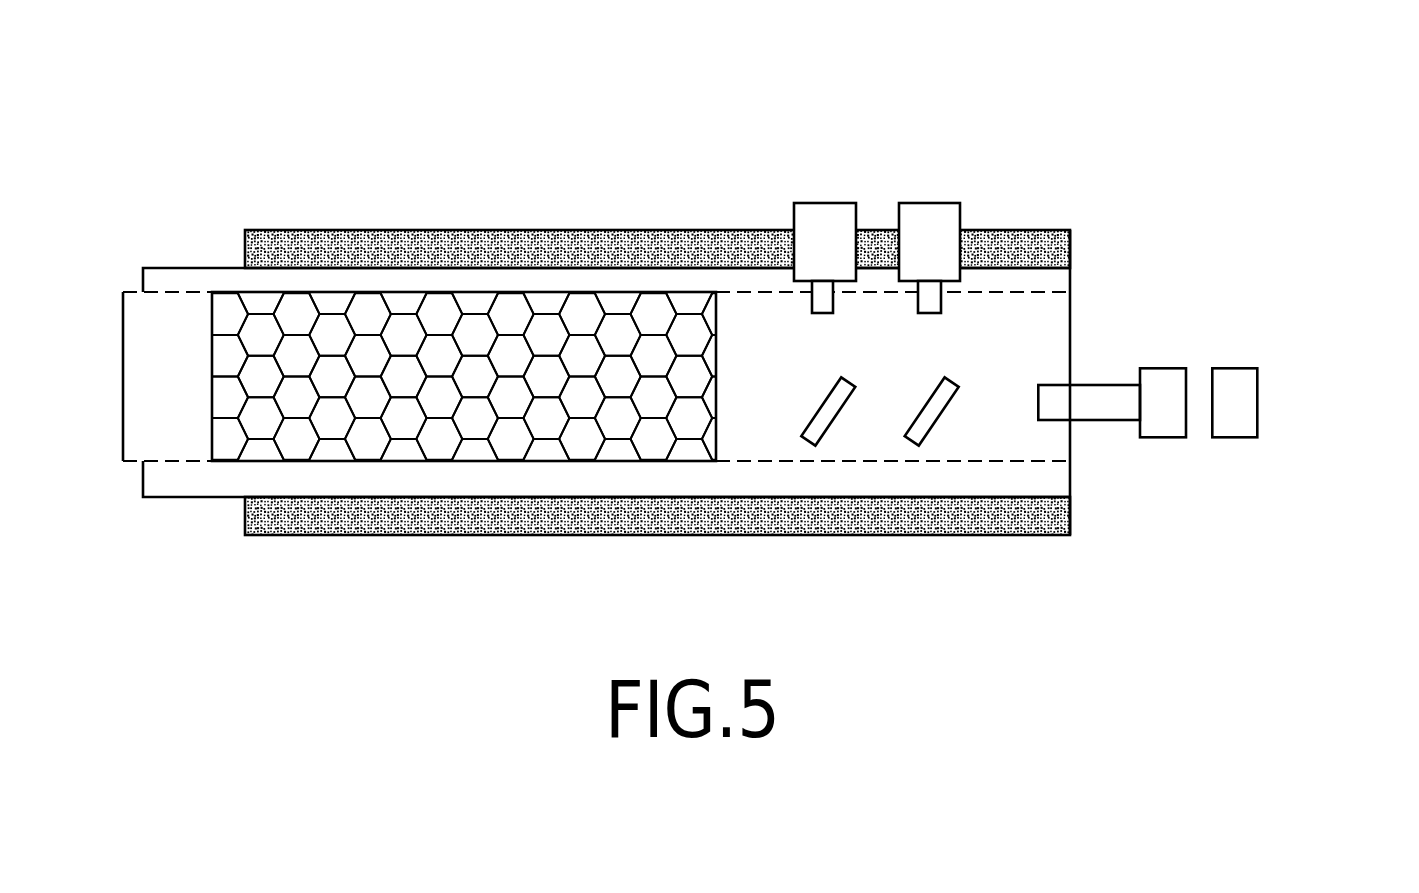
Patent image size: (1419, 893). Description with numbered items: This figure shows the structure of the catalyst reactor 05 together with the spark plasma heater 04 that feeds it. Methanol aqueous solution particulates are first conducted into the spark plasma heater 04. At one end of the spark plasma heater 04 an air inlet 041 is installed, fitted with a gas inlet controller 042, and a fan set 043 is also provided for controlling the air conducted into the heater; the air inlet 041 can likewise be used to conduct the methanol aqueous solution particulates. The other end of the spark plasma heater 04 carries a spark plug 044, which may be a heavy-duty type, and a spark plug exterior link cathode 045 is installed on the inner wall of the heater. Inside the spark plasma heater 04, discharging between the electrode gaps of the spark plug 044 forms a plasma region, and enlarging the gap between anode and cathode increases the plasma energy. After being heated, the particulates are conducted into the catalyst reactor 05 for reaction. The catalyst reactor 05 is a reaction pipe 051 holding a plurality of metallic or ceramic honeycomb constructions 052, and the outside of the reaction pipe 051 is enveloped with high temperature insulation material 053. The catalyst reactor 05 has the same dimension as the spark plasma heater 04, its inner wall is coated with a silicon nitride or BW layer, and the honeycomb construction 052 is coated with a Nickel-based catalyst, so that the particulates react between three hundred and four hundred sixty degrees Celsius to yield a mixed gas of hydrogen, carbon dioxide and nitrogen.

The spark plasma heater 04 is at (977, 281).
The air inlet 041 is at (1123, 433).
The gas inlet controller 042 is at (1170, 368).
The fan set 043 is at (1240, 368).
The spark plug 044 is at (812, 203).
The spark plug exterior link cathode 045 is at (840, 422).
The catalyst reactor 05 is at (585, 217).
The reaction pipe 051 is at (182, 267).
The honeycomb construction 052 is at (367, 313).
The high temperature insulation material 053 is at (460, 510).